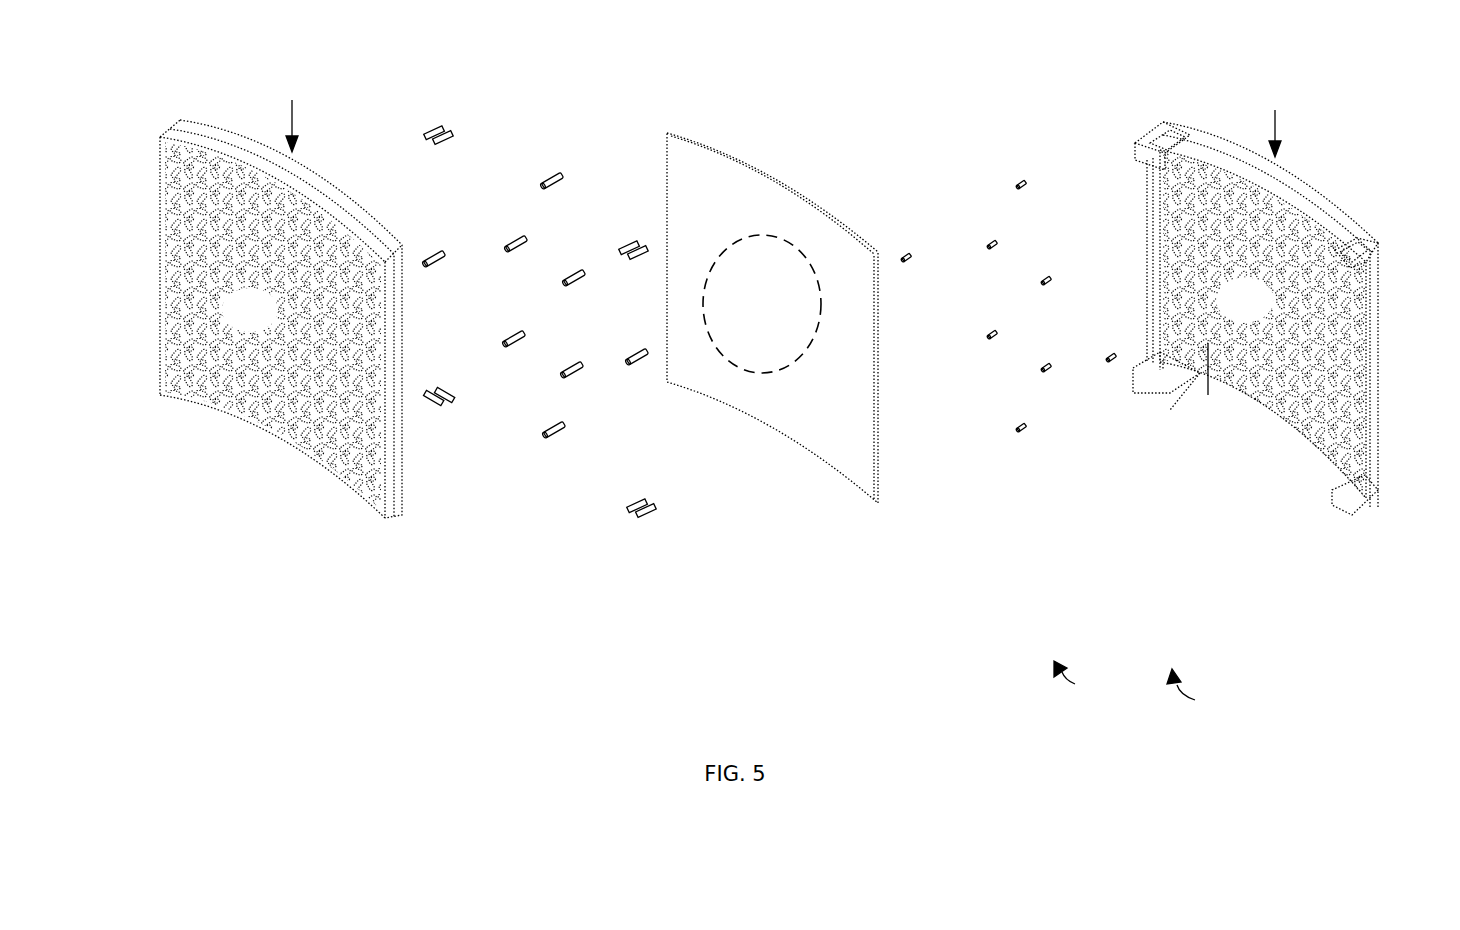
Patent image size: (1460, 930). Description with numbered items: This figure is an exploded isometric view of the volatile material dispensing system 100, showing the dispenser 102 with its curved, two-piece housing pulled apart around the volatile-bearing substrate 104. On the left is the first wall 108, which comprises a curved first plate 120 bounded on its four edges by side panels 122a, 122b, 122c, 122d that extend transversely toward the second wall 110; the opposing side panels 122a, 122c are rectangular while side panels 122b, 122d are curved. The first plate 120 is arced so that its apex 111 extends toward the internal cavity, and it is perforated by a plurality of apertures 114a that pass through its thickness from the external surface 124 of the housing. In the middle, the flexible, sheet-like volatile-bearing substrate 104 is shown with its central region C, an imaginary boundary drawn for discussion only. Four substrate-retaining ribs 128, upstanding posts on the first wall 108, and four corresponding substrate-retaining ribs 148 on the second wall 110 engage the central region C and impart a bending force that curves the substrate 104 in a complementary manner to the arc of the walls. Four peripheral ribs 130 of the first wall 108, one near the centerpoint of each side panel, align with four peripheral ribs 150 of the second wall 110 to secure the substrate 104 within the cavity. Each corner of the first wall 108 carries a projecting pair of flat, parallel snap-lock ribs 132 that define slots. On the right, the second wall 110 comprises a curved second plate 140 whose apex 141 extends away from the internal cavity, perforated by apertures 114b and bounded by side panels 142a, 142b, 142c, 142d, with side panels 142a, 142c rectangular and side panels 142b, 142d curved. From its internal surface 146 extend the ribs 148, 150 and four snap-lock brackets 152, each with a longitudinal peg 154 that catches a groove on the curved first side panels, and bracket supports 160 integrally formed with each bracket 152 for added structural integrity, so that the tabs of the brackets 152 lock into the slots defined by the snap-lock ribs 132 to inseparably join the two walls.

The volatile material dispensing system 100 is at (1201, 690).
The dispenser 102 is at (1083, 679).
The volatile-bearing substrate 104 is at (744, 163).
The first wall 108 is at (184, 490).
The second wall 110 is at (1175, 503).
The apex 111 is at (292, 112).
The apertures 114a is at (232, 337).
The apertures 114b is at (1204, 344).
The curved first plate 120 is at (170, 397).
The side panel 122a is at (162, 212).
The side panel 122b is at (360, 214).
The side panel 122c is at (396, 456).
The side panel 122d is at (313, 462).
The external surface 124 is at (190, 402).
The substrate-retaining ribs 128 is at (518, 248).
The peripheral ribs 130 is at (436, 258).
The snap-lock ribs 132 is at (428, 132).
The curved second plate 140 is at (1207, 388).
The apex 141 is at (1275, 120).
The side panel 142a is at (1155, 252).
The side panel 142b is at (1303, 190).
The side panel 142c is at (1380, 346).
The side panel 142d is at (1323, 462).
The internal surface 146 is at (1212, 395).
The substrate-retaining ribs 148 is at (994, 246).
The peripheral ribs 150 is at (912, 264).
The snap-lock brackets 152 is at (1143, 153).
The longitudinal peg 154 is at (1163, 140).
The bracket supports 160 is at (1165, 367).
The central region C is at (762, 313).